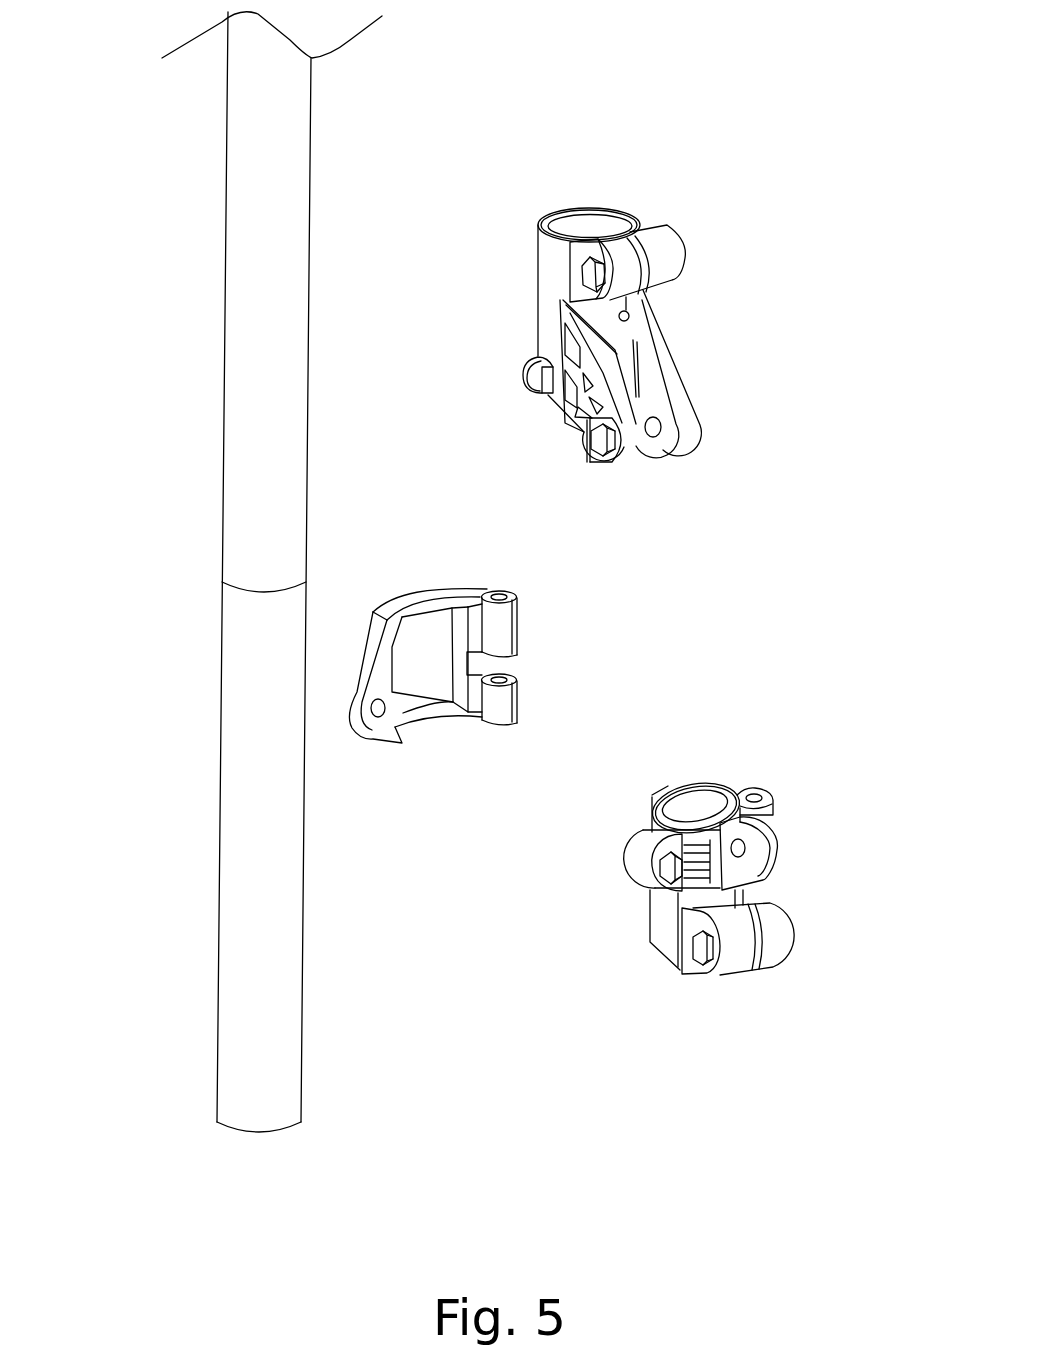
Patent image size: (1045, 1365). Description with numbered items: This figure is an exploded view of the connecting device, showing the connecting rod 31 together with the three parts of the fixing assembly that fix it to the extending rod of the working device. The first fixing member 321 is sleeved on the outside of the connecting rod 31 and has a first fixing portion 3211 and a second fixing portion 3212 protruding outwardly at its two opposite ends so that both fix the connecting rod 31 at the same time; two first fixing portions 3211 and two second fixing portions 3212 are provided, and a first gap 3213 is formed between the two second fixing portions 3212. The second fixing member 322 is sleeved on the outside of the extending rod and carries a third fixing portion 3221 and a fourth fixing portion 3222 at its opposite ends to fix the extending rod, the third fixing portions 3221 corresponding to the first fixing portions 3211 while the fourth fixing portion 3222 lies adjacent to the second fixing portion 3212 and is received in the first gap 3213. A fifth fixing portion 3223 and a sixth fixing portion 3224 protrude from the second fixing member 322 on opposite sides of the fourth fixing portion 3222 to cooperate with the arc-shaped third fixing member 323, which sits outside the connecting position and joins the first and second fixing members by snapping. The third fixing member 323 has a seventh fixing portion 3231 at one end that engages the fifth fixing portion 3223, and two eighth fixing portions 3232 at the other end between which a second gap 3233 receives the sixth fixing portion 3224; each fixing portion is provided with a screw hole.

The connecting rod 31 is at (260, 851).
The first fixing member 321 is at (619, 334).
The first fixing portion 3211 is at (662, 253).
The second fixing portion 3212 is at (678, 437).
The first gap 3213 is at (648, 407).
The second fixing member 322 is at (715, 874).
The third fixing portion 3221 is at (770, 937).
The fourth fixing portion 3222 is at (767, 842).
The fifth fixing portion 3223 is at (635, 866).
The sixth fixing portion 3224 is at (763, 795).
The third fixing member 323 is at (523, 650).
The seventh fixing portion 3231 is at (372, 722).
The eighth fixing portion 3232 is at (497, 625).
The second gap 3233 is at (497, 664).